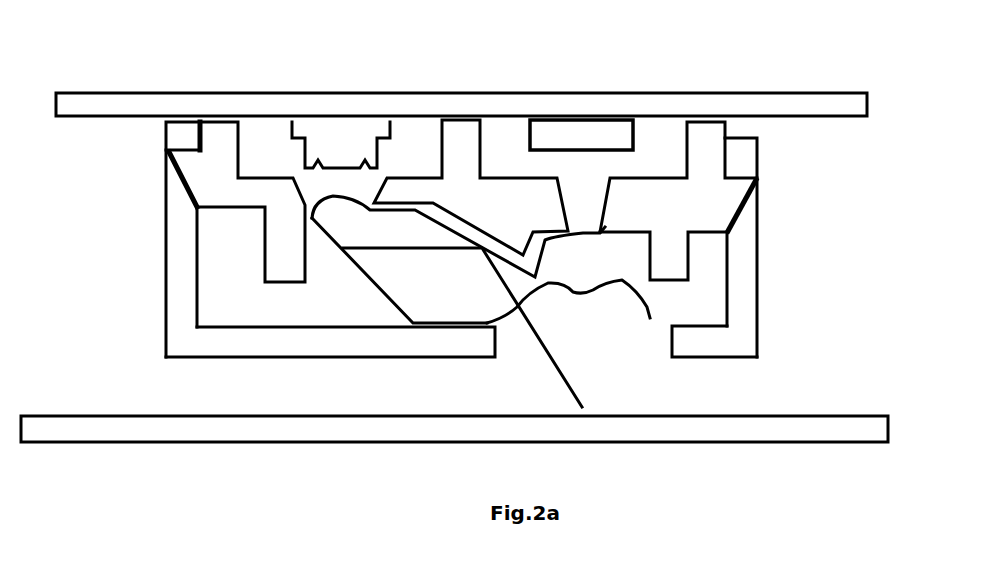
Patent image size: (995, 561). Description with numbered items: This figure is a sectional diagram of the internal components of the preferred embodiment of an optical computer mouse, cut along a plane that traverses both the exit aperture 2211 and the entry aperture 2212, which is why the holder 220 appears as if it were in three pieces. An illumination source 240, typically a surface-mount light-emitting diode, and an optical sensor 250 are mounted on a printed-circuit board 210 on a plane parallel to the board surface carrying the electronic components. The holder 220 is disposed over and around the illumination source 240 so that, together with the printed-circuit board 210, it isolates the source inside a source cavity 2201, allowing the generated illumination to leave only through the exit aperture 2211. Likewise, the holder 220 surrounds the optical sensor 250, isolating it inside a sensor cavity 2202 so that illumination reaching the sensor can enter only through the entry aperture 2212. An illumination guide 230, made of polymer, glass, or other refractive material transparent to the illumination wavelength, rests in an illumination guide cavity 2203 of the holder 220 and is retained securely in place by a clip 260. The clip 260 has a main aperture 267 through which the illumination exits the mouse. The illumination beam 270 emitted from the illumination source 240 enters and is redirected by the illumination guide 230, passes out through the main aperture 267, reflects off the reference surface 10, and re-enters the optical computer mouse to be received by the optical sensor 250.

The reference surface 10 is at (454, 429).
The printed-circuit board 210 is at (461, 105).
The holder 220 is at (472, 186).
The illumination guide 230 is at (447, 312).
The illumination source 240 is at (343, 248).
The optical sensor 250 is at (583, 407).
The clip 260 is at (461, 341).
The main aperture 267 is at (522, 343).
The illumination beam 270 is at (577, 311).
The source cavity 2201 is at (273, 143).
The sensor cavity 2202 is at (665, 143).
The illumination guide cavity 2203 is at (323, 252).
The exit aperture 2211 is at (372, 190).
The entry aperture 2212 is at (572, 195).